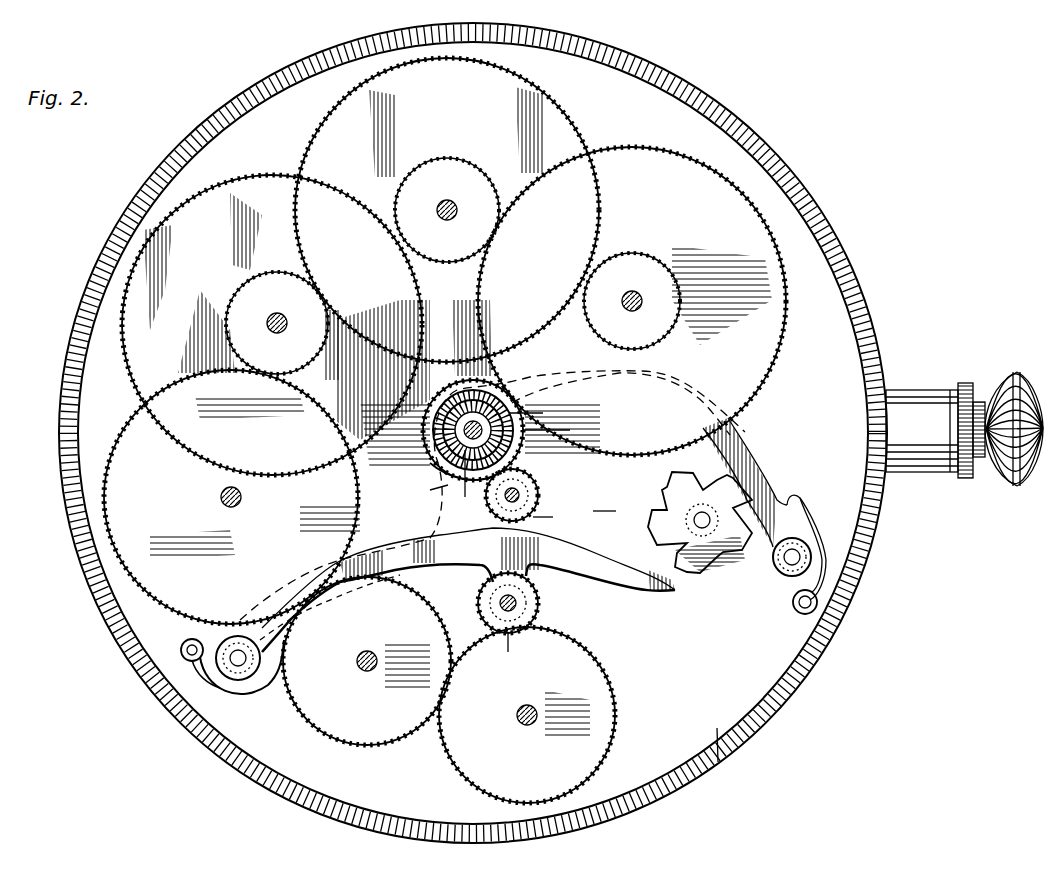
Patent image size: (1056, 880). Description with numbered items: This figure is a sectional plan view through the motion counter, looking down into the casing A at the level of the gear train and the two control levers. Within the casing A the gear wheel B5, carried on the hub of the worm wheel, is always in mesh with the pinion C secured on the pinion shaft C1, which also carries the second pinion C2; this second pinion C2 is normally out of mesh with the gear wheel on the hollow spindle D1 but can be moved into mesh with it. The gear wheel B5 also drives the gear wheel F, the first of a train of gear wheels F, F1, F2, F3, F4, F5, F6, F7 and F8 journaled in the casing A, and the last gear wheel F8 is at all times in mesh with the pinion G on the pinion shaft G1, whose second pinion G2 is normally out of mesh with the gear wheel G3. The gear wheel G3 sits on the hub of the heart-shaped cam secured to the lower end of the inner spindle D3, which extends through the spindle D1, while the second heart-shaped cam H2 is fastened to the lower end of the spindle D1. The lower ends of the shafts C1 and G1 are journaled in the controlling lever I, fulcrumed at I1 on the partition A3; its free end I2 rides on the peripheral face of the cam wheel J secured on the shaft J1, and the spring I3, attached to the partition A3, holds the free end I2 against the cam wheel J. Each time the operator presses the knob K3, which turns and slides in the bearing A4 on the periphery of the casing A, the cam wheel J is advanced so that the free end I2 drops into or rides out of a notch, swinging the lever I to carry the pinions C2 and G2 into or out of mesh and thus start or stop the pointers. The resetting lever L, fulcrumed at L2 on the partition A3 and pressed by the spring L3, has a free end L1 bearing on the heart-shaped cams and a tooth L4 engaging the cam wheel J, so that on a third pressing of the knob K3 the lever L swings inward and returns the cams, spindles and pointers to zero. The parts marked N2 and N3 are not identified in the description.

The casing A is at (106, 622).
The partition A3 is at (719, 761).
The bearing A4 is at (921, 405).
The knob K3 is at (1013, 376).
The gear wheel F is at (764, 372).
The gear wheel F1 is at (650, 343).
The gear wheel F2 is at (563, 125).
The gear wheel F3 is at (450, 172).
The gear wheel F4 is at (265, 176).
The gear wheel F5 is at (250, 296).
The gear wheel F6 is at (128, 430).
The gear wheel F7 is at (353, 730).
The gear wheel F8 is at (613, 703).
The hollow shaft or spindle D1 is at (432, 430).
The hollow shaft or spindle D3 is at (540, 412).
The central gear N2 is at (559, 432).
The pinion arbor N3 is at (469, 483).
The gear wheel B5 is at (453, 477).
The heart-shaped cam H2 is at (430, 495).
The pinion C is at (505, 501).
The pinion shaft C1 is at (520, 493).
The second pinion C2 is at (555, 516).
The pinion G is at (527, 592).
The pinion shaft G1 is at (498, 603).
The second pinion G2 is at (512, 655).
The gear wheel G3 is at (618, 512).
The controlling lever I is at (411, 515).
The fulcrum I1 is at (236, 680).
The free end I2 is at (668, 580).
The spring I3 is at (262, 690).
The cam wheel J is at (667, 527).
The shaft J1 is at (702, 530).
The resetting lever L is at (738, 435).
The free end L1 is at (514, 382).
The fulcrum L2 is at (790, 566).
The spring L3 is at (806, 530).
The tooth L4 is at (747, 492).